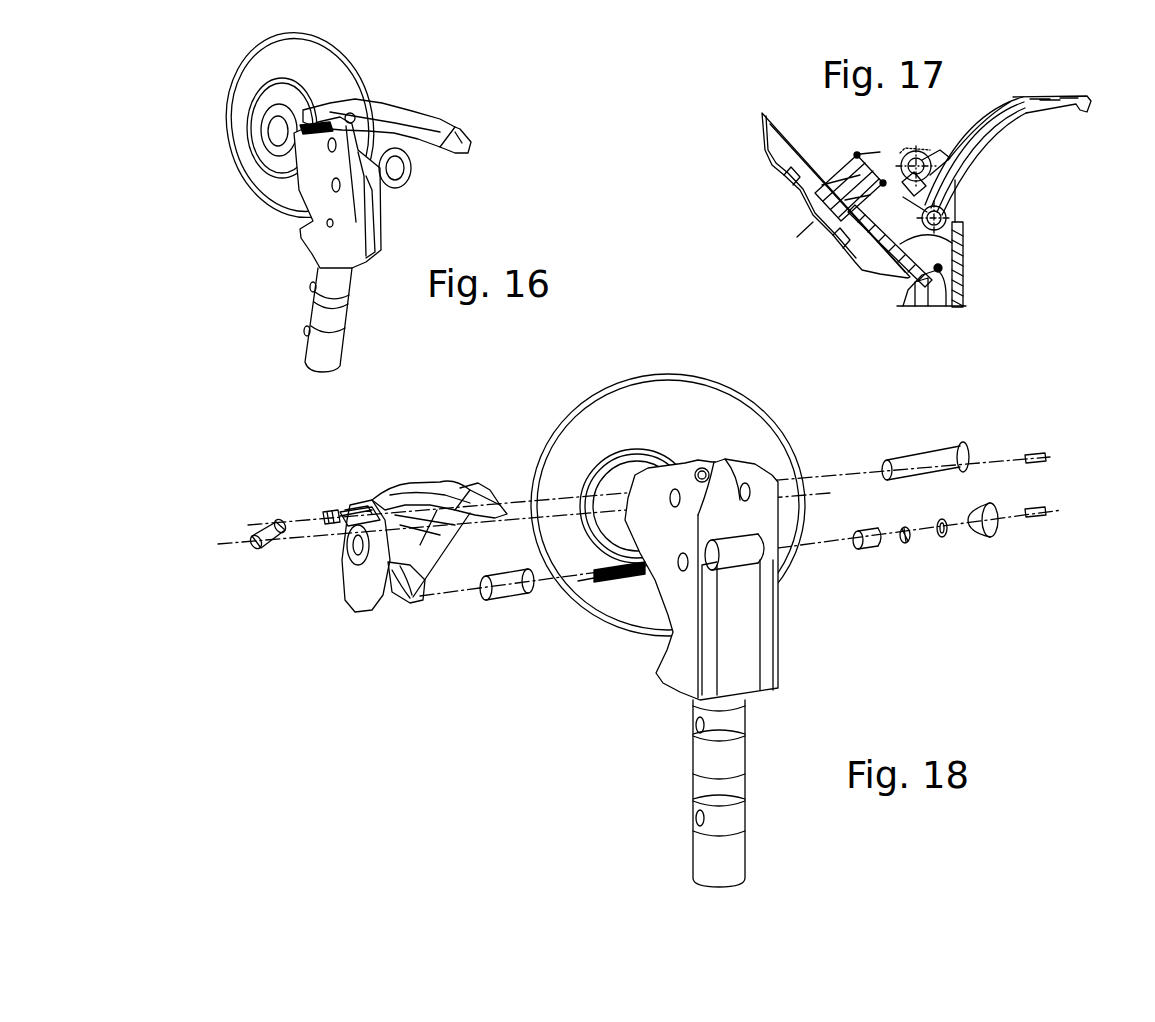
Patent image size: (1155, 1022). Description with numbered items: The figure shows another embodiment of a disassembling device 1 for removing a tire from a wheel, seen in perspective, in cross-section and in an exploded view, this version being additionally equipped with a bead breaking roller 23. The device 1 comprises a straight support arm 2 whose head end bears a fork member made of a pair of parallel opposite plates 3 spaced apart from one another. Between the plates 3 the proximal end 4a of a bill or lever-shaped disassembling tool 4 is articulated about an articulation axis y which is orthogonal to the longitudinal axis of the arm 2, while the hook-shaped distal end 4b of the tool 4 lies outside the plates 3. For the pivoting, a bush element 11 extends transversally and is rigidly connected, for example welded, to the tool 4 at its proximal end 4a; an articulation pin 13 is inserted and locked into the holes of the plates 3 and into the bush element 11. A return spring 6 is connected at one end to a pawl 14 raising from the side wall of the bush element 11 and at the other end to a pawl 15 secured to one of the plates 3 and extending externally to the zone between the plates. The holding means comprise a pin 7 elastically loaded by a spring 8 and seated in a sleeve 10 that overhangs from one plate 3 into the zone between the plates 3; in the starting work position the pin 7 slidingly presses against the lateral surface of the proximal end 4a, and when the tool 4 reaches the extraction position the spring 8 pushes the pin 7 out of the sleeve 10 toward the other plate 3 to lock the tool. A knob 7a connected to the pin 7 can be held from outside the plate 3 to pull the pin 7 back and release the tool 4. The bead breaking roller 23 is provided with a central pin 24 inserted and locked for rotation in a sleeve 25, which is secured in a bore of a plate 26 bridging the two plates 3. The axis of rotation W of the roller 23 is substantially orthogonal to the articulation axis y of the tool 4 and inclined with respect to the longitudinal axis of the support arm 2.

In FIG. 16, the disassembling device 1 is at (379, 196).
In FIG. 17, the disassembling device 1 is at (912, 204).
In FIG. 16, the support arm 2 is at (347, 307).
In FIG. 18, the support arm 2 is at (692, 758).
In FIG. 16, the plates 3 is at (305, 238).
In FIG. 18, the plates 3 is at (673, 670).
In FIG. 16, the disassembling tool 4 is at (420, 128).
In FIG. 17, the disassembling tool 4 is at (993, 132).
In FIG. 18, the disassembling tool 4 is at (405, 500).
In FIG. 17, the proximal end 4a is at (937, 156).
In FIG. 18, the proximal end 4a is at (373, 603).
In FIG. 16, the distal end 4b is at (470, 146).
In FIG. 17, the distal end 4b is at (1084, 110).
In FIG. 18, the distal end 4b is at (497, 495).
In FIG. 18, the return spring 6 is at (265, 528).
In FIG. 18, the pin 7 is at (512, 596).
In FIG. 16, the knob 7a is at (413, 170).
In FIG. 18, the knob 7a is at (982, 541).
In FIG. 18, the spring 8 is at (620, 580).
In FIG. 16, the sleeve 10 is at (388, 200).
In FIG. 18, the bush element 11 is at (377, 520).
In FIG. 18, the articulation pin 13 is at (923, 457).
In FIG. 18, the pawl 14 is at (352, 508).
In FIG. 18, the pawl 15 is at (638, 490).
In FIG. 16, the bead breaking roller 23 is at (352, 62).
In FIG. 17, the bead breaking roller 23 is at (785, 182).
In FIG. 18, the bead breaking roller 23 is at (578, 414).
In FIG. 17, the central pin 24 is at (830, 232).
In FIG. 17, the sleeve 25 is at (850, 170).
In FIG. 17, the plate 26 is at (963, 245).
In FIG. 17, the axis of rotation w-w W is at (835, 194).
In FIG. 18, the articulation axis y- y is at (640, 510).